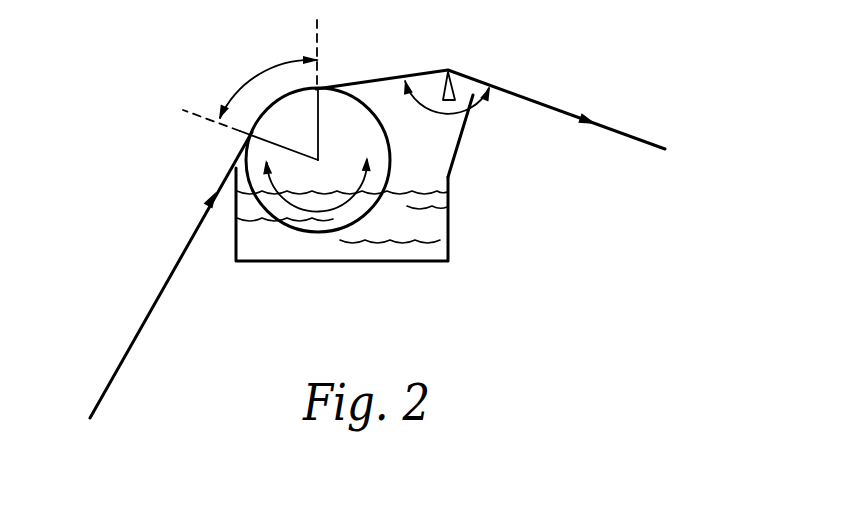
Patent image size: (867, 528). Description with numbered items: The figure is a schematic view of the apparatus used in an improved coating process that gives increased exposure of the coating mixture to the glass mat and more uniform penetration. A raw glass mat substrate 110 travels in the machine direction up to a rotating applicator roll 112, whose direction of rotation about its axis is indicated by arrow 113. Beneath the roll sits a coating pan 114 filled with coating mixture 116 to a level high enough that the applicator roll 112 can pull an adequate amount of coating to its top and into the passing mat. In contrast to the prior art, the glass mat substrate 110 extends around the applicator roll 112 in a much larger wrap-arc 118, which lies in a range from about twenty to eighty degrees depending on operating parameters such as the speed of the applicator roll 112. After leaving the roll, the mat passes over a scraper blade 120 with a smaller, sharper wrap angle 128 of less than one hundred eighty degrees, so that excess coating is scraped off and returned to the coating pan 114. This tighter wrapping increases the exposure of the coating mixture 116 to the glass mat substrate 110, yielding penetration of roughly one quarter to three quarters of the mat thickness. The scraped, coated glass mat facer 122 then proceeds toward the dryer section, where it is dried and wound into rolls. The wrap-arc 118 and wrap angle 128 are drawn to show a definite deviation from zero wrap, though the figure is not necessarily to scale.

The glass mat substrate 110 is at (170, 267).
The applicator roll 112 is at (359, 98).
The direction of rotation arrow 113 is at (333, 208).
The coating pan 114 is at (423, 262).
The coating mixture 116 is at (430, 222).
The wrap-arc 118 is at (257, 80).
The scraper blade 120 is at (454, 89).
The coated glass mat facer 122 is at (545, 102).
The wrap angle 128 is at (477, 101).